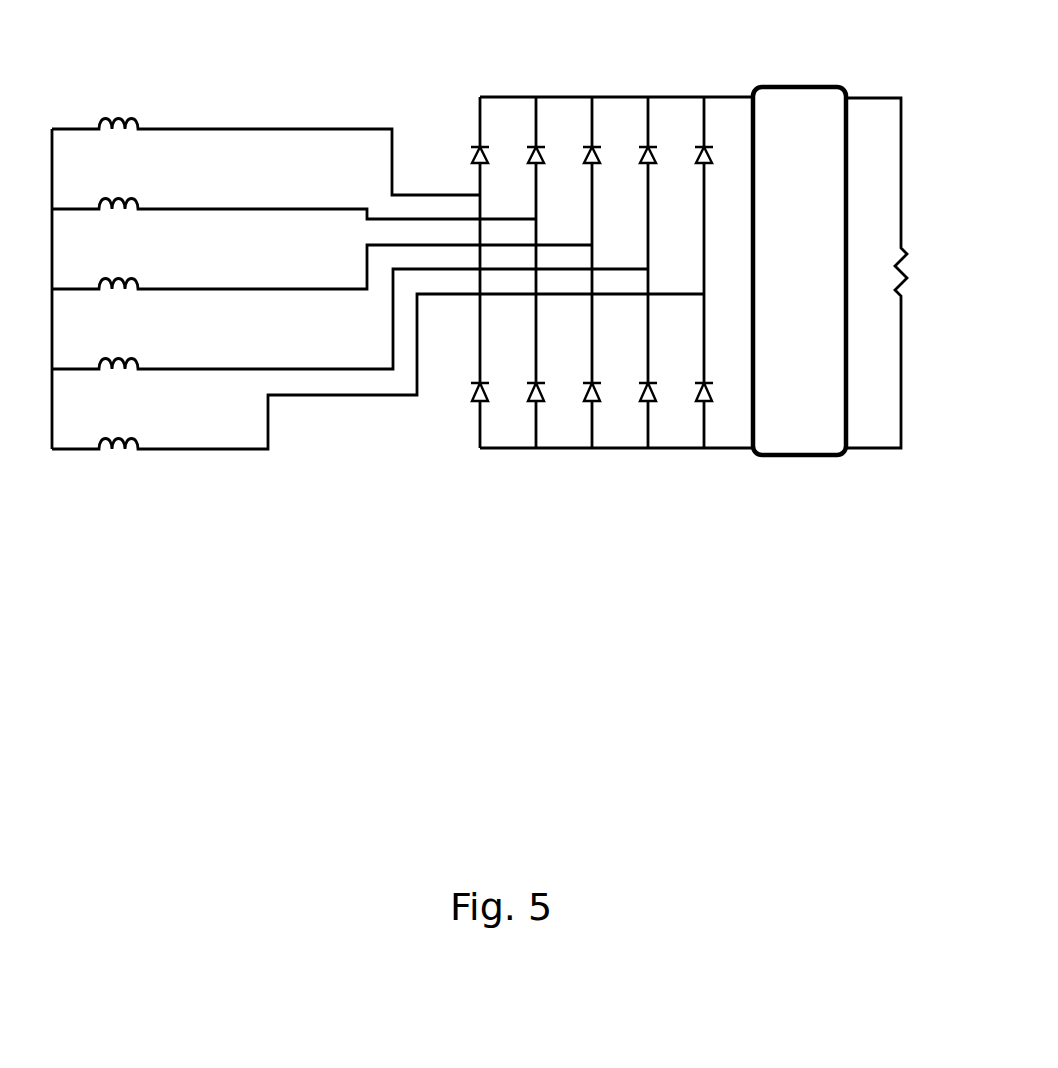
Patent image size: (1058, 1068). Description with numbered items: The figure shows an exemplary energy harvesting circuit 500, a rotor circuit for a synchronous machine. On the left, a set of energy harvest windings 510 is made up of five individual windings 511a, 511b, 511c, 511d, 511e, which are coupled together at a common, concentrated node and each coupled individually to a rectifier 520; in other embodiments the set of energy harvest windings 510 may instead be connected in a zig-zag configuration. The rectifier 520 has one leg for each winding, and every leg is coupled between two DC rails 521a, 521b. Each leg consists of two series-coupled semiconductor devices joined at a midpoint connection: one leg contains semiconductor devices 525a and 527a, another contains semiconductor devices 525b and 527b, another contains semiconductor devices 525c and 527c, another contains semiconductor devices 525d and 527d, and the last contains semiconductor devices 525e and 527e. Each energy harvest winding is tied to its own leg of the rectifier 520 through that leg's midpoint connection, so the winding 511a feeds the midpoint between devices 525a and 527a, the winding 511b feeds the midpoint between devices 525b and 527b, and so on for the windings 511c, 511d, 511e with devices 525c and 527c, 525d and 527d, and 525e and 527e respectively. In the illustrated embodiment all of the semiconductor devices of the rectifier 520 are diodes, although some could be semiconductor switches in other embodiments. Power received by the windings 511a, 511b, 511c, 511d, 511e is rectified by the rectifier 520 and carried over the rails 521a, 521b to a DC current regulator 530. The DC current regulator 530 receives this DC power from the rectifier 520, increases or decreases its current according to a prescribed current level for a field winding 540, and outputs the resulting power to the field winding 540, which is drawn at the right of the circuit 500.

The energy harvesting circuit 500 is at (536, 505).
The set of energy harvest windings 510 is at (173, 505).
The winding 511a is at (118, 117).
The winding 511b is at (118, 197).
The winding 511c is at (118, 277).
The winding 511d is at (118, 357).
The winding 511e is at (118, 437).
The rectifier 520 is at (537, 50).
The DC rail 521a is at (613, 96).
The DC rail 521b is at (613, 449).
The semiconductor device 525a is at (477, 146).
The semiconductor device 525b is at (533, 146).
The semiconductor device 525c is at (589, 146).
The semiconductor device 525d is at (645, 146).
The semiconductor device 525e is at (701, 146).
The semiconductor device 527a is at (477, 382).
The semiconductor device 527b is at (533, 382).
The semiconductor device 527c is at (589, 382).
The semiconductor device 527d is at (645, 382).
The semiconductor device 527e is at (701, 382).
The DC current regulator 530 is at (790, 86).
The field winding 540 is at (901, 248).